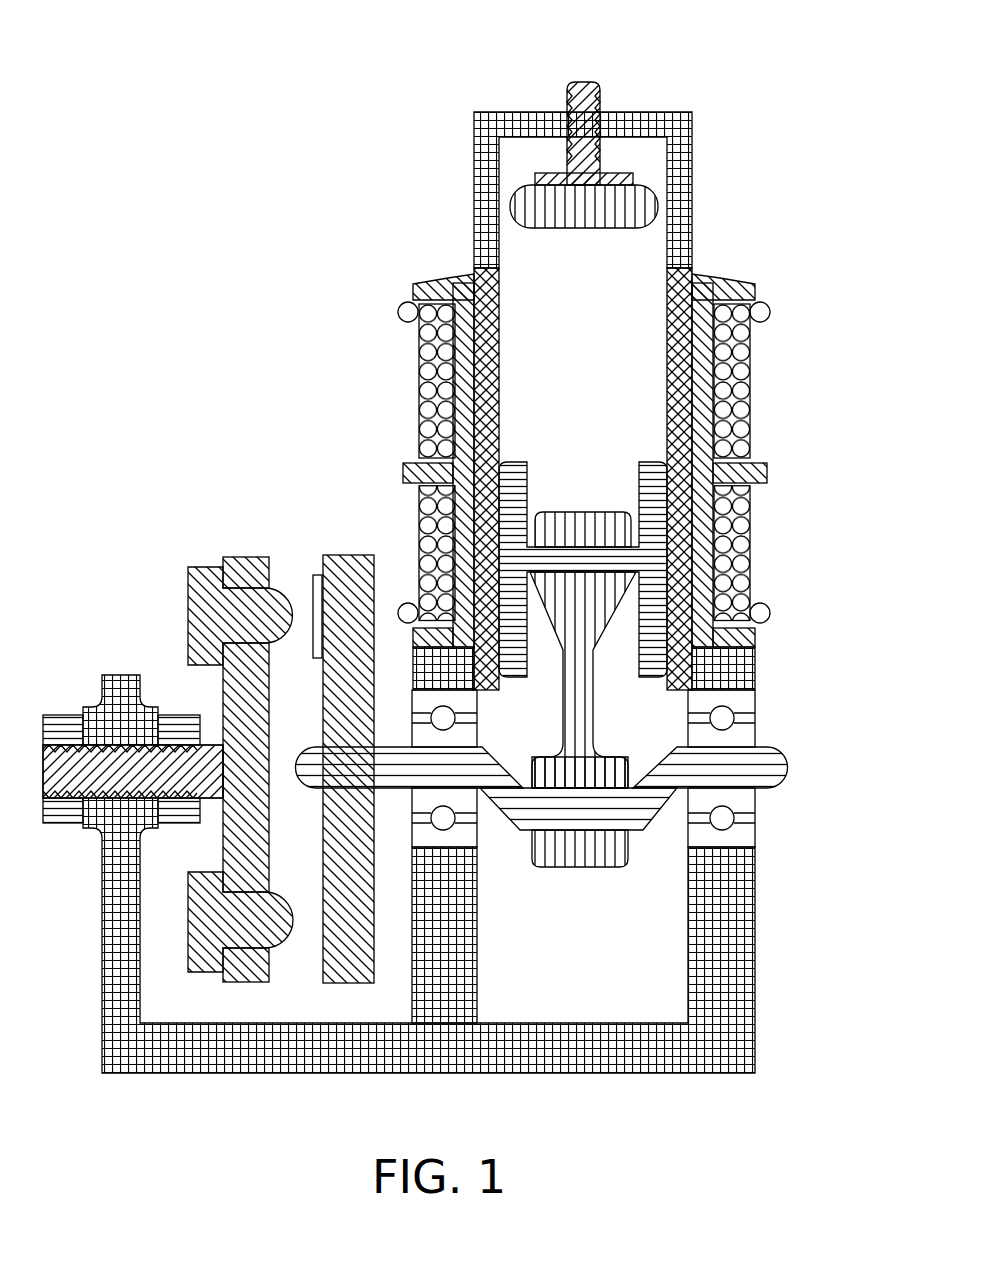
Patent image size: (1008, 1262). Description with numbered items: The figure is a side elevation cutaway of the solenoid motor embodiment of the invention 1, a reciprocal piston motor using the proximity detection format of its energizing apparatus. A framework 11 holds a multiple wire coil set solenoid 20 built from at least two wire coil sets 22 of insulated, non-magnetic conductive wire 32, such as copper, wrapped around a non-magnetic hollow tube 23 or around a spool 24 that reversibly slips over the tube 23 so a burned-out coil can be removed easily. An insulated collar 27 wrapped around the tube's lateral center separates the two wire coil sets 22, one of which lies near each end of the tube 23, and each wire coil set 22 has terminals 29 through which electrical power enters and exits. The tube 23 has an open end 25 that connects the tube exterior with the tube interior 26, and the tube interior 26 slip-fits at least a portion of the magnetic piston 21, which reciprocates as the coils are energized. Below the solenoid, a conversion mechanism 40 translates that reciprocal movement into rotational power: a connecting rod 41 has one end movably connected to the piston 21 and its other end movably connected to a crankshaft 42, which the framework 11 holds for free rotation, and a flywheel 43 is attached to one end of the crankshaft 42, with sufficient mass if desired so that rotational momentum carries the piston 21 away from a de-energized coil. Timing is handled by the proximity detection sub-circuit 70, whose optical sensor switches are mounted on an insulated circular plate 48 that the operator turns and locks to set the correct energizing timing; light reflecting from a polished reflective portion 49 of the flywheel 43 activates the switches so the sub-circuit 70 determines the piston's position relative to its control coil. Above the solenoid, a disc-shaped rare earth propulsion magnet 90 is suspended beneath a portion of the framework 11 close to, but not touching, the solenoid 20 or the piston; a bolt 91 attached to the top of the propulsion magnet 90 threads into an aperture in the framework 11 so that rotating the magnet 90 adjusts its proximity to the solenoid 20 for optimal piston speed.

The invention 1 is at (792, 273).
The framework 11 is at (507, 112).
The multiple wire coil set solenoid/inducer 20 is at (747, 280).
The piston 21 is at (638, 481).
The wire coil set 22 is at (752, 348).
The tube 23 is at (473, 275).
The spool 24 is at (757, 640).
The open end 25 is at (665, 682).
The tube interior 26 is at (598, 320).
The insulated collar 27 is at (403, 474).
The terminals 29 is at (398, 313).
The wire 32 is at (417, 342).
The conversion mechanism 40 is at (650, 822).
The connecting rod 41 is at (598, 720).
The crankshaft 42 is at (787, 772).
The flywheel 43 is at (345, 985).
The insulated circular plate 48 is at (252, 556).
The polished/reflective portion 49 is at (310, 597).
The proximity detection sub-circuit 70 is at (188, 615).
The propulsion magnet 90 is at (658, 200).
The bolt 91 is at (583, 82).